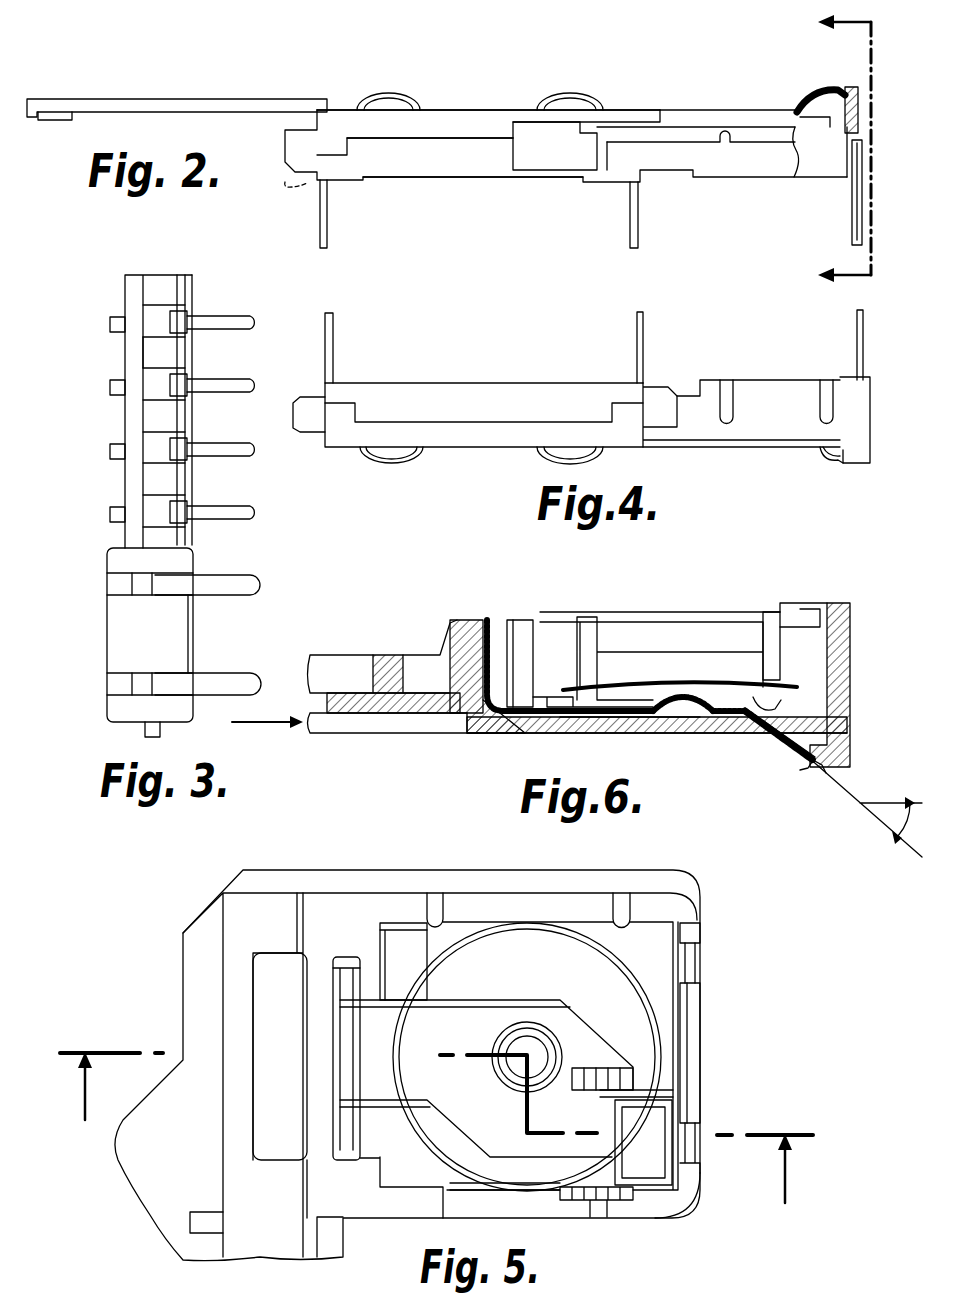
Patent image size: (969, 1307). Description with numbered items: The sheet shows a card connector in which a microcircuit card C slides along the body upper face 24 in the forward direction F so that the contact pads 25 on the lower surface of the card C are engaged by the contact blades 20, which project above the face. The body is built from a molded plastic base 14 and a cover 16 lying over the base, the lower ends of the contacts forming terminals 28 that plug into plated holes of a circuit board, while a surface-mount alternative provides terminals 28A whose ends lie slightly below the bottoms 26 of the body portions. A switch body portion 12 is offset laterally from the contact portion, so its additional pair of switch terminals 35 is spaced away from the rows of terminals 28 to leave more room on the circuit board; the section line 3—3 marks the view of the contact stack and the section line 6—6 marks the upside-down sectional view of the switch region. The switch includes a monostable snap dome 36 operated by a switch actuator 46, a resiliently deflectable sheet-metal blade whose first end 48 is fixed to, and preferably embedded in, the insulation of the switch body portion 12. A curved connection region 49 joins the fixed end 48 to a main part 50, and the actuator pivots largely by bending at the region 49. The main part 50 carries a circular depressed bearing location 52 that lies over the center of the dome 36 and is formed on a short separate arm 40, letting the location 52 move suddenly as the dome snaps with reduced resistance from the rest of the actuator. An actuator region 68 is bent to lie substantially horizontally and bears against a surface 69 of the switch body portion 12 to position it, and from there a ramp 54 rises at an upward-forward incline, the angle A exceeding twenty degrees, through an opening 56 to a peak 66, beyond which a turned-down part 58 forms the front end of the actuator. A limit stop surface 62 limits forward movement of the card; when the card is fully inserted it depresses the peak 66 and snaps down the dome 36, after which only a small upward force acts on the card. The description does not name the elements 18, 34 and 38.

In FIG. 2, the microcircuit card C is at (197, 99).
In FIG. 2, the contact pads 25 is at (72, 120).
In FIG. 6, the switch body portion 12 is at (483, 733).
In FIG. 5, the switch body portion 12 is at (330, 870).
In FIG. 2, the base 14 is at (420, 165).
In FIG. 4, the base 14 is at (552, 383).
In FIG. 2, the cover 16 is at (440, 100).
In FIG. 3, the cover 16 is at (125, 288).
In FIG. 2, the contact block 18 is at (487, 137).
In FIG. 2, the contact blade 20 is at (392, 96).
In FIG. 3, the contact blade 20 is at (118, 395).
In FIG. 4, the contact blade 20 is at (392, 463).
In FIG. 2, the body upper surface 24 is at (537, 100).
In FIG. 3, the body upper surface 24 is at (125, 355).
In FIG. 4, the body upper surface 24 is at (527, 460).
In FIG. 6, the body upper surface 24 is at (610, 733).
In FIG. 2, the bottoms of the body portions 26 is at (495, 180).
In FIG. 3, the bottoms of the body portions 26 is at (190, 360).
In FIG. 2, the terminals 28 is at (332, 237).
In FIG. 3, the terminals 28 is at (232, 310).
In FIG. 4, the terminals 28 is at (333, 345).
In FIG. 2, the surface-mount terminals 28A is at (300, 187).
In FIG. 5, the housing recess 34 is at (445, 940).
In FIG. 2, the switch conductor terminals 35 is at (852, 210).
In FIG. 3, the switch conductor terminals 35 is at (263, 598).
In FIG. 6, the snap dome 36 is at (625, 688).
In FIG. 6, the housing block 38 is at (807, 627).
In FIG. 6, the separate arm 40 is at (470, 618).
In FIG. 5, the separate arm 40 is at (553, 1020).
In FIG. 2, the switch actuator 46 is at (825, 92).
In FIG. 4, the switch actuator 46 is at (828, 462).
In FIG. 6, the switch actuator 46 is at (760, 740).
In FIG. 5, the switch actuator 46 is at (462, 1032).
In FIG. 6, the first end of the actuator 48 is at (495, 625).
In FIG. 5, the first end of the actuator 48 is at (333, 985).
In FIG. 6, the curved connection region 49 is at (460, 733).
In FIG. 5, the curved connection region 49 is at (372, 997).
In FIG. 6, the main part of the actuator 50 is at (548, 733).
In FIG. 6, the bearing location 52 is at (682, 698).
In FIG. 5, the bearing location 52 is at (545, 1040).
In FIG. 6, the ramp 54 is at (775, 757).
In FIG. 5, the ramp 54 is at (685, 1120).
In FIG. 6, the opening 56 is at (737, 716).
In FIG. 5, the opening 56 is at (627, 1217).
In FIG. 2, the turned-down part 58 is at (851, 110).
In FIG. 4, the turned-down part 58 is at (855, 420).
In FIG. 6, the turned-down part 58 is at (850, 740).
In FIG. 5, the turned-down part 58 is at (668, 1157).
In FIG. 6, the limit stop surface 62 is at (830, 778).
In FIG. 6, the peak 66 is at (808, 770).
In FIG. 6, the actuator region 68 is at (752, 706).
In FIG. 6, the surface 69 is at (672, 718).
In FIG. 2, the section line 3 is at (828, 151).
In FIG. 5, the section line 6 is at (436, 1147).
In FIG. 3, the forward direction F is at (255, 725).
In FIG. 6, the angle A is at (890, 845).